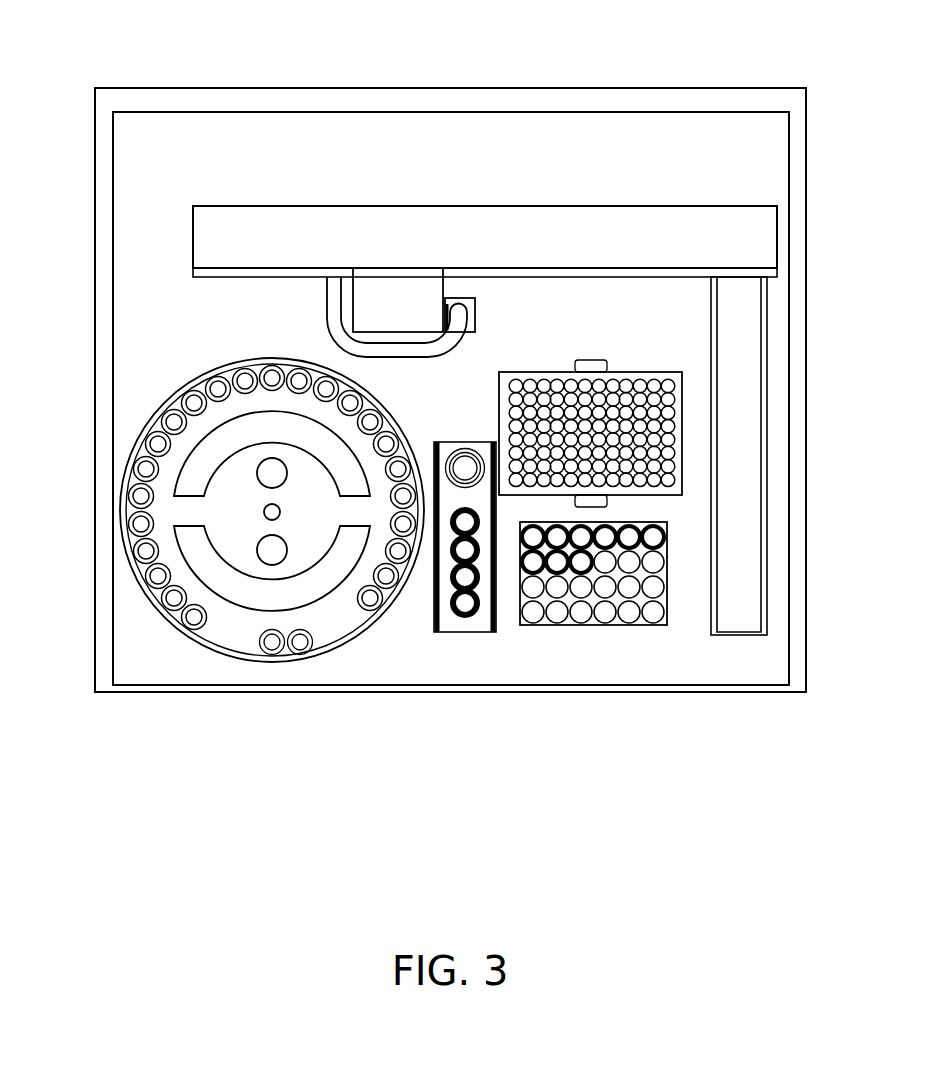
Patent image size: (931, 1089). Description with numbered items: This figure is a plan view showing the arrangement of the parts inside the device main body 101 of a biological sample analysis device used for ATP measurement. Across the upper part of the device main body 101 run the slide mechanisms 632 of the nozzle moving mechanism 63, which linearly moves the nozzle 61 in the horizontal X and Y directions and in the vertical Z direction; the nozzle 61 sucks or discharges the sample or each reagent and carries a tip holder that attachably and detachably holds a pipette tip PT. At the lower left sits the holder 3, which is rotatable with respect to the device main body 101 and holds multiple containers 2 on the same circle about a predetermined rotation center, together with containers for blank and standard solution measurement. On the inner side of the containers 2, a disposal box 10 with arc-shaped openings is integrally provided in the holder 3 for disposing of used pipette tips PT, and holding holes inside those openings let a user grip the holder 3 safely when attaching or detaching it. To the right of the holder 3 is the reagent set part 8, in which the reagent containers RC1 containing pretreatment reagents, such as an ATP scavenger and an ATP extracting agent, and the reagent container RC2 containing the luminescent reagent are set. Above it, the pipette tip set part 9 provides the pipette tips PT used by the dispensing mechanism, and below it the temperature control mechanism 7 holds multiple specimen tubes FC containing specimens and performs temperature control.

The device main body 101 is at (437, 88).
The slide mechanisms 632 is at (410, 206).
The nozzle moving mechanism 63 is at (253, 291).
The nozzle 61 is at (477, 316).
The holder 3 is at (237, 655).
The containers 2 is at (129, 524).
The disposal box 10 is at (193, 473).
The reagent set part 8 is at (465, 596).
The reagent containers RC1 is at (480, 602).
The reagent container RC2 is at (457, 487).
The pipette tip set part 9 is at (676, 416).
The pipette tips PT is at (650, 380).
The temperature control mechanism 7 is at (688, 636).
The specimen tubes FC is at (667, 535).